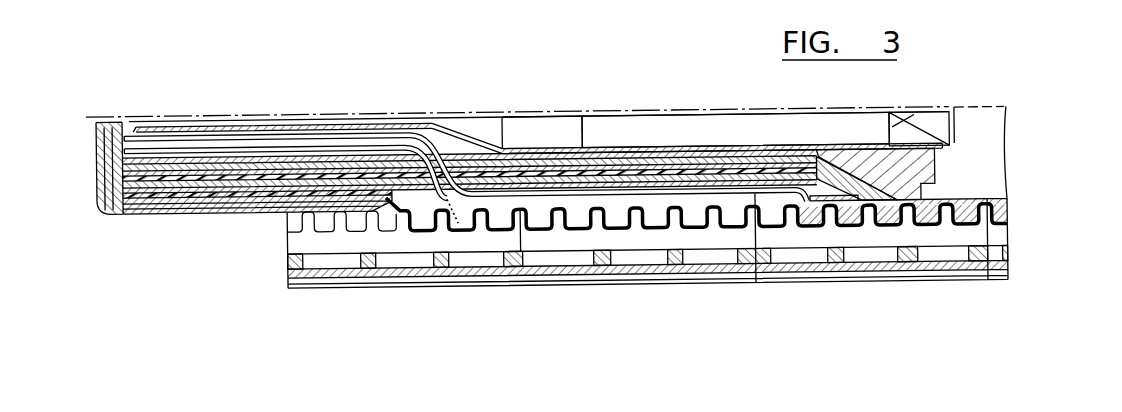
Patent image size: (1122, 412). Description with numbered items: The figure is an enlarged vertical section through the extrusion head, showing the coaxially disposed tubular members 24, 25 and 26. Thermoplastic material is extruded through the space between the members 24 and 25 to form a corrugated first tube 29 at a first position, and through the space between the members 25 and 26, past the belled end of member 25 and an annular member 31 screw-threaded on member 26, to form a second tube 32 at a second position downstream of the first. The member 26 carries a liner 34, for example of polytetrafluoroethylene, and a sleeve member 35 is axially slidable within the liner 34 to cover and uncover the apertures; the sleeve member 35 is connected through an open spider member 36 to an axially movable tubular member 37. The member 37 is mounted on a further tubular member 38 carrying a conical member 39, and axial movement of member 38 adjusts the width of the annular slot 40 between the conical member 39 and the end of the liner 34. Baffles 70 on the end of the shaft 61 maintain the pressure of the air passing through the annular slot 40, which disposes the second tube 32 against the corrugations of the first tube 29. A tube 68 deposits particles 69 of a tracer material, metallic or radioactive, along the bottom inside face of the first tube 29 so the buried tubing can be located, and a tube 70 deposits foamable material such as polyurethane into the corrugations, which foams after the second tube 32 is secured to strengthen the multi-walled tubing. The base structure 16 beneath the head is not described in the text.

The base support member 16 is at (418, 293).
The tubular member 24 is at (230, 200).
The tubular member 25 is at (188, 174).
The tubular member 26 is at (150, 163).
The first tube 29 is at (398, 223).
The annular member 31 is at (915, 188).
The second tube 32 is at (957, 199).
The liner 34 is at (273, 153).
The sleeve member 35 is at (585, 139).
The open spider member 36 is at (433, 124).
The tubular member 37 is at (307, 121).
The further tubular member 38 is at (663, 117).
The conical member 39 is at (890, 136).
The annular slot 40 is at (945, 154).
The shaft 61 is at (988, 115).
The tube 68 is at (433, 212).
The particles of tracer material 69 is at (472, 214).
The tube for foamable material 70 is at (715, 196).